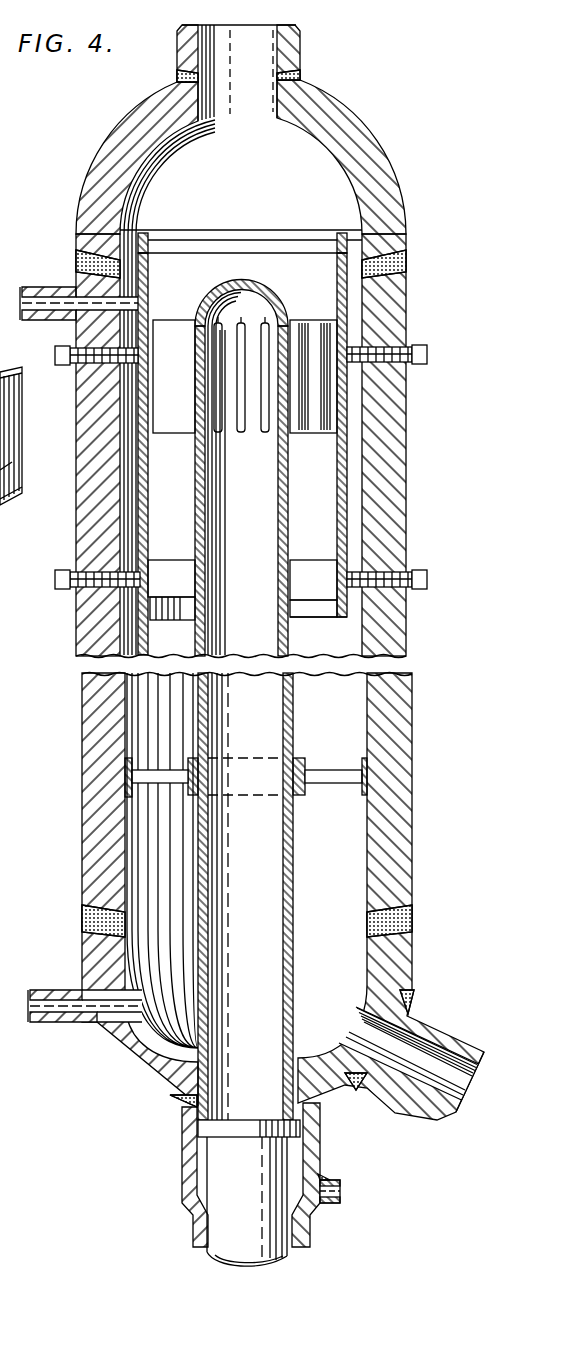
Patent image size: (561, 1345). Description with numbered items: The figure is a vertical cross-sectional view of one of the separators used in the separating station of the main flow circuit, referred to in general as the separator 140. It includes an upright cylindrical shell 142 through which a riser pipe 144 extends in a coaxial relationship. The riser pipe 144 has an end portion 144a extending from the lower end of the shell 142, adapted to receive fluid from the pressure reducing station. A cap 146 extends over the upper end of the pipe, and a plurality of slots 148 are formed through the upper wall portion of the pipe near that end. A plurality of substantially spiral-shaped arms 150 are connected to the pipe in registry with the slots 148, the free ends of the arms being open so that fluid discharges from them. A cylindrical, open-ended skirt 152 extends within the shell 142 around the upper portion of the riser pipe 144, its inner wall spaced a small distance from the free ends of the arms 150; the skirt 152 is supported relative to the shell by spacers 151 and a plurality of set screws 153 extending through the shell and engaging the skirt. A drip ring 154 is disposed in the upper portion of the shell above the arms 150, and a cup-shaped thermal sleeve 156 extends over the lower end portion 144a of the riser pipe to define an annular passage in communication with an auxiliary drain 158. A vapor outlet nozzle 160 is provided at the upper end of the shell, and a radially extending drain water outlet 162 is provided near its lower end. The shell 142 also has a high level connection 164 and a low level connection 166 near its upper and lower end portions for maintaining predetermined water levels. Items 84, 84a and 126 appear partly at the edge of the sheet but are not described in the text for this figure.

The separator 140 is at (92, 142).
The upright cylindrical shell 142 is at (80, 237).
The vapor outlet nozzle 160 is at (285, 25).
The high level connection 164 is at (73, 290).
The drip ring 154 is at (347, 228).
The skirt 152 is at (343, 535).
The spiral-shaped arms 150 is at (194, 396).
The spacers 151 is at (310, 590).
The cap 146 is at (262, 290).
The slots 148 is at (268, 436).
The set screws 153 is at (418, 347).
The plate member 84 is at (11, 420).
The plate member portion 84a is at (12, 462).
The conduit 126 is at (11, 809).
The riser pipe 144 is at (206, 890).
The low level connection 166 is at (70, 990).
The drain water outlet 162 is at (450, 1112).
The thermal sleeve 156 is at (182, 1162).
The auxiliary drain 158 is at (330, 1180).
The end portion 144a is at (275, 1232).